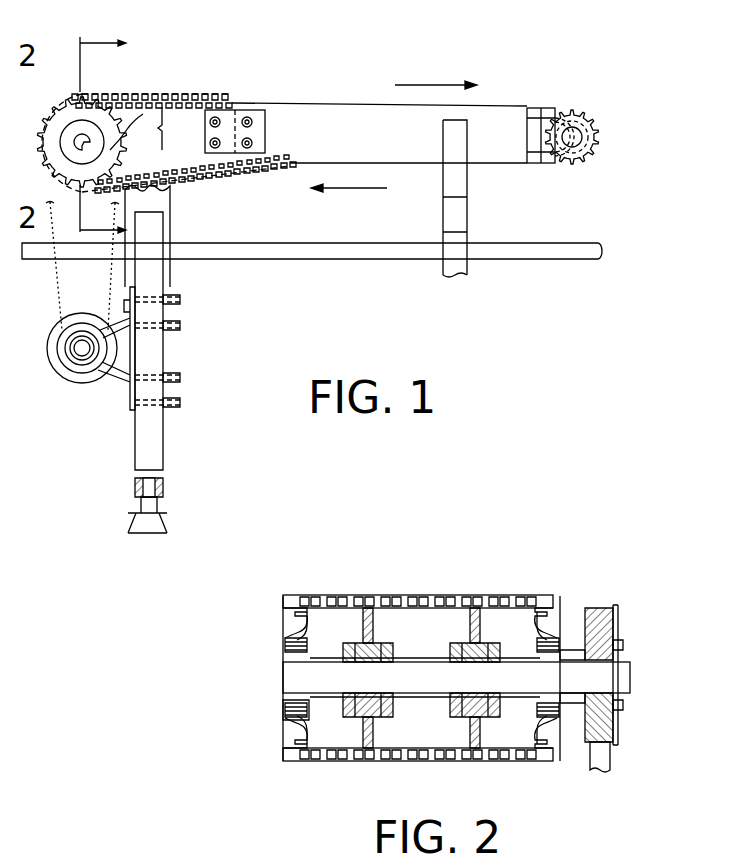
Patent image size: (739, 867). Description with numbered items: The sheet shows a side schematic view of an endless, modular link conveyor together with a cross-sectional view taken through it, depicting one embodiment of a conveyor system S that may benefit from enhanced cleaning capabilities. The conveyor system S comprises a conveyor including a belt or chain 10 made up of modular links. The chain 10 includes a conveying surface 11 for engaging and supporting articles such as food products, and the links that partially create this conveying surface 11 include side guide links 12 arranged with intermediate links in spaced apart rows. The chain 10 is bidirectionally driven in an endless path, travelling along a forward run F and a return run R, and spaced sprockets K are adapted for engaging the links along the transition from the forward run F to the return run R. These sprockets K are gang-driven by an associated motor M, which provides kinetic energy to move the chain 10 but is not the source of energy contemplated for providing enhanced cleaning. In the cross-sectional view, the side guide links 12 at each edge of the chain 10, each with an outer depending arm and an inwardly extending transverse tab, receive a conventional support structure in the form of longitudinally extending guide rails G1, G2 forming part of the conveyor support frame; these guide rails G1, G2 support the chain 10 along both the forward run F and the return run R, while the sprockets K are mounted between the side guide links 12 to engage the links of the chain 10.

In FIG. 1, the chain 10 is at (182, 92).
In FIG. 2, the chain 10 is at (500, 595).
In FIG. 1, the conveying surface 11 is at (131, 75).
In FIG. 2, the conveying surface 11 is at (358, 596).
In FIG. 2, the side guide links 12 is at (283, 607).
In FIG. 1, the sprockets K is at (113, 136).
In FIG. 2, the sprockets K is at (472, 628).
In FIG. 1, the conveyor system S is at (518, 88).
In FIG. 1, the forward run F is at (431, 84).
In FIG. 1, the return run R is at (351, 188).
In FIG. 1, the motor M is at (87, 386).
In FIG. 2, the guide rail G1 is at (283, 712).
In FIG. 2, the guide rail G2 is at (590, 752).